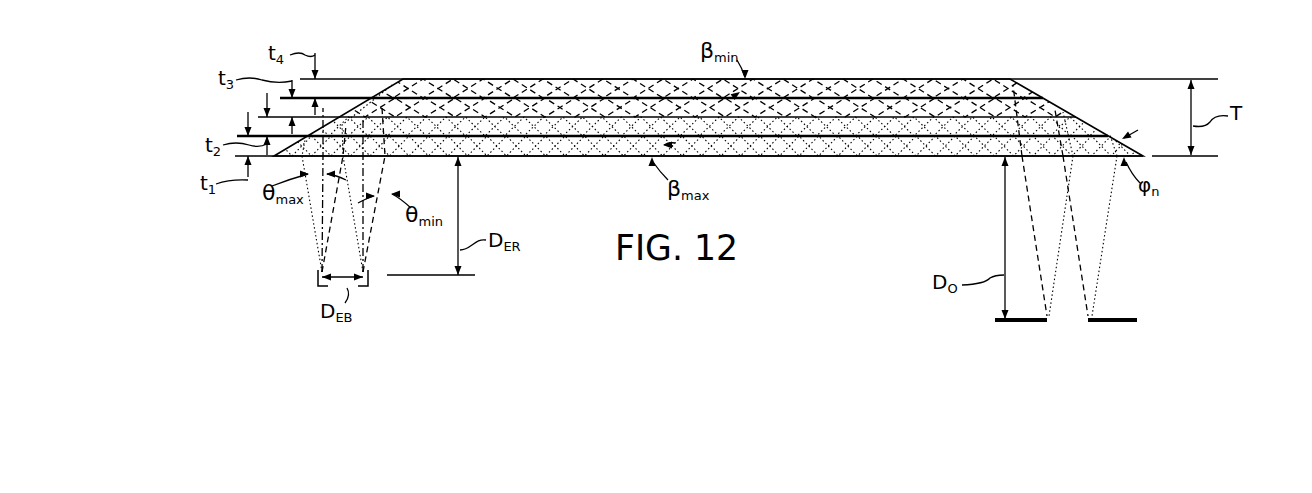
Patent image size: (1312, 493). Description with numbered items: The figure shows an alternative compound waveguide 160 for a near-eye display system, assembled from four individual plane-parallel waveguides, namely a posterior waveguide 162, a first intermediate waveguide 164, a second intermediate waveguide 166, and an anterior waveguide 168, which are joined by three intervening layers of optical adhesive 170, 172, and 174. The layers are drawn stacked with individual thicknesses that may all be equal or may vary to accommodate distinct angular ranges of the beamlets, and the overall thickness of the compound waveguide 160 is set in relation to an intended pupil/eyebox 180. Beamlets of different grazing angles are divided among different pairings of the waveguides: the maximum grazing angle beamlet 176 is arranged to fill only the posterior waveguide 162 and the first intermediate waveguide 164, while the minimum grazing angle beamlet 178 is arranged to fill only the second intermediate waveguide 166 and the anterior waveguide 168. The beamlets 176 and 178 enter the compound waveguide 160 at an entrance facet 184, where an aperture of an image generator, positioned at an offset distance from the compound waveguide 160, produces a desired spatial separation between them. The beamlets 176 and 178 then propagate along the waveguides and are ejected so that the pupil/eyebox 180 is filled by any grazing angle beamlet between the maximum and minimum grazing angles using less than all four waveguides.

The compound waveguide 160 is at (590, 76).
The posterior waveguide 162 is at (531, 78).
The first intermediate waveguide 164 is at (875, 110).
The second intermediate waveguide 166 is at (555, 122).
The anterior waveguide 168 is at (766, 145).
The layer of optical adhesive 170 is at (658, 97).
The layer of optical adhesive 172 is at (950, 117).
The layer of optical adhesive 174 is at (818, 137).
The maximum grazing angle beamlet 176 is at (620, 120).
The minimum grazing angle beamlet 178 is at (806, 112).
The pupil/eyebox 180 is at (322, 284).
The entrance facet 184 is at (1048, 112).